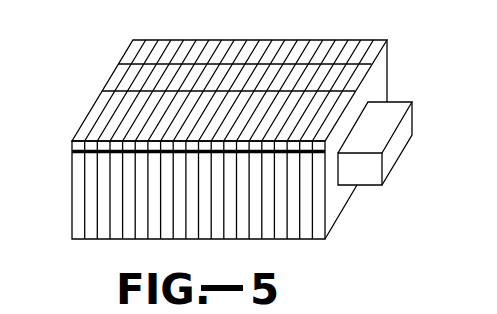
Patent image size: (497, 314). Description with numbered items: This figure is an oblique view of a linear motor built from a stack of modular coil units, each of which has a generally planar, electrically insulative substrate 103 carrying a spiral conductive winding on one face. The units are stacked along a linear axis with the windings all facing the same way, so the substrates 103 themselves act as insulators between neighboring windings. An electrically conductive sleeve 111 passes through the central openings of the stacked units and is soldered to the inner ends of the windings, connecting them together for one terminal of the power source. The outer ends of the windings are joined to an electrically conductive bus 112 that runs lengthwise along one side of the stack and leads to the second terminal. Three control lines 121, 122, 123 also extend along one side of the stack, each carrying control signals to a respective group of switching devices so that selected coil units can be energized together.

The substrate 103 is at (323, 43).
The sleeve 111 is at (390, 113).
The bus 112 is at (102, 155).
The control line 121 is at (140, 62).
The control line 122 is at (125, 88).
The control line 123 is at (107, 118).